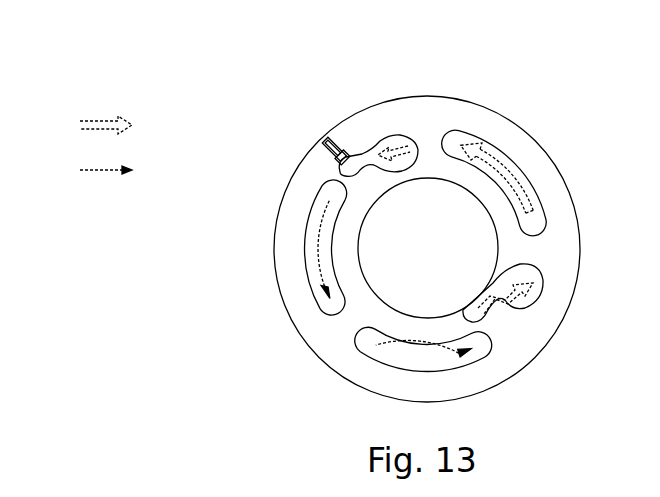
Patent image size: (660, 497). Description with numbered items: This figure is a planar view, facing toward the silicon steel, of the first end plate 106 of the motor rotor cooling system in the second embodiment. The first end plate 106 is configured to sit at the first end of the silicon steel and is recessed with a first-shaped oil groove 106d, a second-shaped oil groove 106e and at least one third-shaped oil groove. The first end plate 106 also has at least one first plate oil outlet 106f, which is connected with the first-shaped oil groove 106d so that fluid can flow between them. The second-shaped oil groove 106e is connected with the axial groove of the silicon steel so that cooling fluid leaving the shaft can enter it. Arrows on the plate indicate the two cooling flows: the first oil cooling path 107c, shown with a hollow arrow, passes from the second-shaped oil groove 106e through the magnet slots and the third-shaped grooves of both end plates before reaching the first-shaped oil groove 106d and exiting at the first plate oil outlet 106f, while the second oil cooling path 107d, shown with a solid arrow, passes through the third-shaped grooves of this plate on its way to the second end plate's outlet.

The first end plate 106 is at (317, 122).
The first-shaped oil groove 106d is at (408, 137).
The second-shaped oil groove 106e is at (538, 295).
The first plate oil outlet 106f is at (322, 139).
The first oil cooling path 107c is at (136, 125).
The second oil cooling path 107d is at (137, 170).